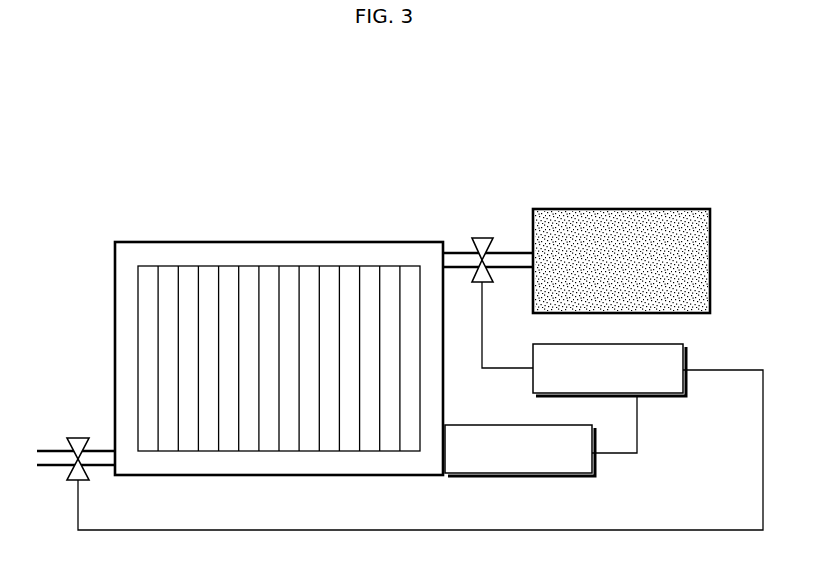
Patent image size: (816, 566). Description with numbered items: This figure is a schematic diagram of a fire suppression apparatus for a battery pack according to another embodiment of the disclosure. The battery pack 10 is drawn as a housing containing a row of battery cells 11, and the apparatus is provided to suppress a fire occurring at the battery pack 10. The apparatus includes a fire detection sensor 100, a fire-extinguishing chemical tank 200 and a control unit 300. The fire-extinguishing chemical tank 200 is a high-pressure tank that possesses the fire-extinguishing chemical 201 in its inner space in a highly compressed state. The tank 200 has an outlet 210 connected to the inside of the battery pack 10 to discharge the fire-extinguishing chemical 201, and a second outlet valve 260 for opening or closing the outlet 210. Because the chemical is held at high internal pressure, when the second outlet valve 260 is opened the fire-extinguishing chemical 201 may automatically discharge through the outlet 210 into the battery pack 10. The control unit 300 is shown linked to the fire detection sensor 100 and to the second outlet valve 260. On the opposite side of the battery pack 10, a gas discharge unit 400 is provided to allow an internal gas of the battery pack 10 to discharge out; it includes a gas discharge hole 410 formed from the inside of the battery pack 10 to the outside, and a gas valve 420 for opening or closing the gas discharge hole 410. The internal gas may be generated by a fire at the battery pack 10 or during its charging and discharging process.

The battery pack 10 is at (313, 242).
The battery cell 11 is at (232, 272).
The fire detection sensor 100 is at (490, 425).
The fire-extinguishing chemical tank 200 is at (645, 209).
The fire-extinguishing chemical 201 is at (584, 218).
The outlet 210 is at (506, 270).
The second outlet valve 260 is at (482, 238).
The control unit 300 is at (670, 397).
The gas discharge unit 400 is at (50, 481).
The gas discharge hole 410 is at (55, 451).
The gas valve 420 is at (78, 438).